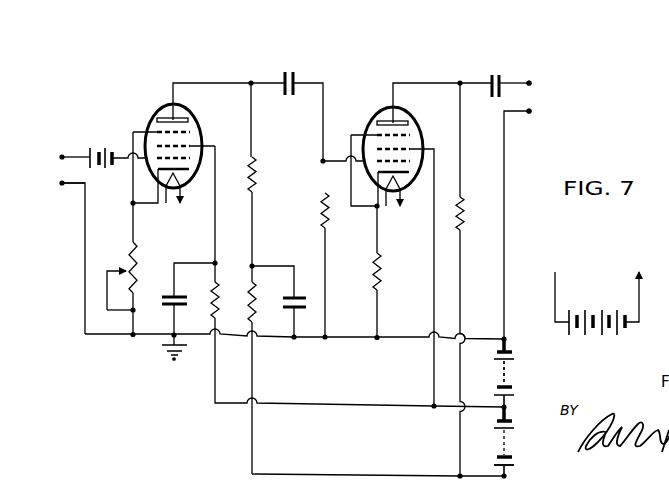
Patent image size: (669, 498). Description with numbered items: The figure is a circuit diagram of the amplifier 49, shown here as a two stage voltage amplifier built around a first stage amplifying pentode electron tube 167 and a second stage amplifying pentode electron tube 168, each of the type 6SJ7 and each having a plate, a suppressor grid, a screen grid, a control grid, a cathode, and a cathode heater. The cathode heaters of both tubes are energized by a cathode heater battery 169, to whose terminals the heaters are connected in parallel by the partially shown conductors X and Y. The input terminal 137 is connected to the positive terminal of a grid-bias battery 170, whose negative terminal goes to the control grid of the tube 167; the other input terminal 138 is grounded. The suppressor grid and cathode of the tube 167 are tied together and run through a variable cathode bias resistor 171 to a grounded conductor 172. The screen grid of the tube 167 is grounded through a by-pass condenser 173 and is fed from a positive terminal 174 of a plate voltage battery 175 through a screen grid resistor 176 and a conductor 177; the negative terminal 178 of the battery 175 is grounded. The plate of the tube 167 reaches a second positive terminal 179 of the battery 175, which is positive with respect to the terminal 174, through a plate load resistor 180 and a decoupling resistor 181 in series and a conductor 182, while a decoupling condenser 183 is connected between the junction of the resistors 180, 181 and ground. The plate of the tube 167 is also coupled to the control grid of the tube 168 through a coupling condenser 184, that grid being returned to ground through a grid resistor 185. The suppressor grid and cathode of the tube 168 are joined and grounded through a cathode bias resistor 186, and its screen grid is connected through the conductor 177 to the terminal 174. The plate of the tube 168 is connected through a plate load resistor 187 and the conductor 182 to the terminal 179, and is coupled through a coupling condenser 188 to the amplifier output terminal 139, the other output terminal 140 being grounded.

The amplifier 49 is at (117, 59).
The input terminal 137 is at (63, 147).
The input terminal 138 is at (62, 185).
The amplifier output terminal 139 is at (530, 83).
The output terminal 140 is at (530, 111).
The first stage amplifying pentode electron tube 167 is at (200, 121).
The second stage amplifying pentode electron tube 168 is at (418, 124).
The cathode heater battery 169 is at (598, 305).
The grid-bias battery 170 is at (97, 168).
The variable cathode bias resistor 171 is at (126, 256).
The grounded conductor 172 is at (309, 339).
The by-pass condenser 173 is at (166, 308).
The positive terminal 174 is at (509, 411).
The plate voltage battery 175 is at (521, 387).
The screen grid resistor 176 is at (212, 287).
The conductor 177 is at (330, 407).
The negative terminal 178 is at (508, 337).
The second positive terminal 179 is at (502, 469).
The plate load resistor 180 is at (257, 183).
The decoupling resistor 181 is at (256, 290).
The conductor 182 is at (333, 474).
The decoupling condenser 183 is at (288, 311).
The coupling condenser 184 is at (296, 73).
The grid resistor 185 is at (322, 200).
The cathode bias resistor 186 is at (372, 270).
The plate load resistor 187 is at (464, 222).
The coupling condenser 188 is at (500, 75).